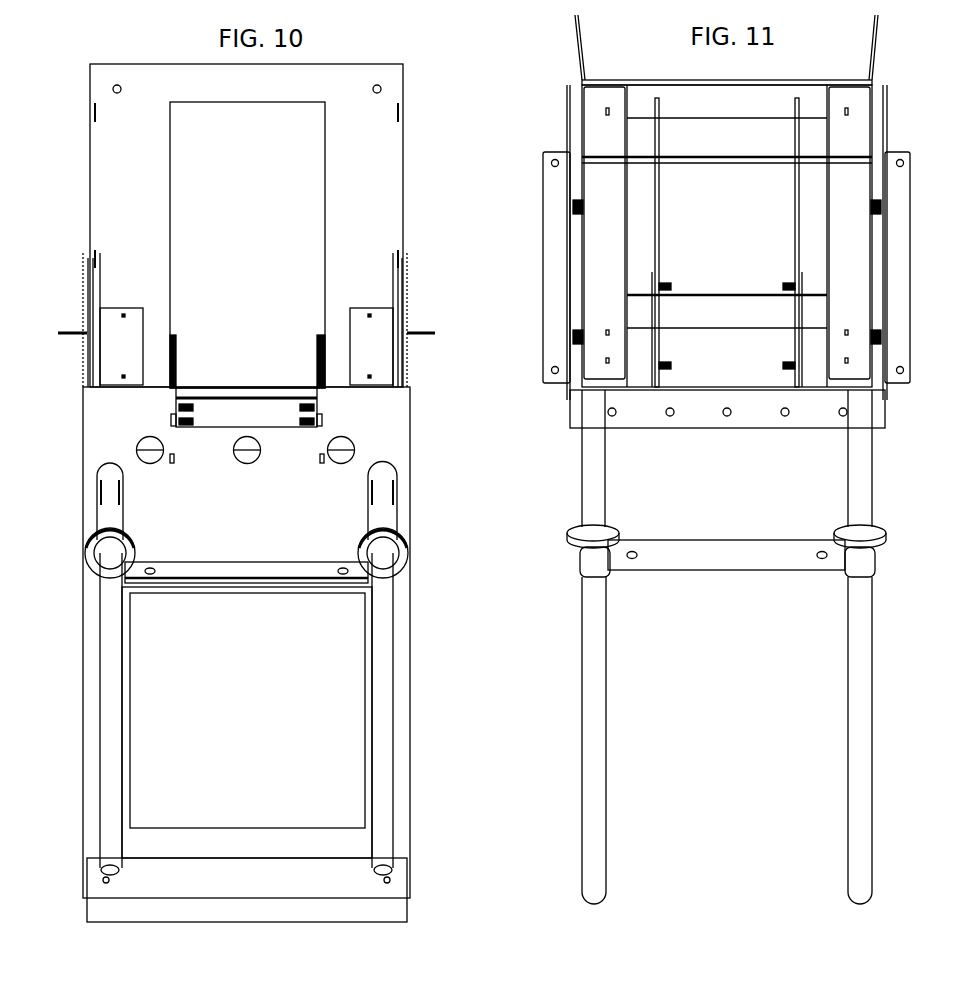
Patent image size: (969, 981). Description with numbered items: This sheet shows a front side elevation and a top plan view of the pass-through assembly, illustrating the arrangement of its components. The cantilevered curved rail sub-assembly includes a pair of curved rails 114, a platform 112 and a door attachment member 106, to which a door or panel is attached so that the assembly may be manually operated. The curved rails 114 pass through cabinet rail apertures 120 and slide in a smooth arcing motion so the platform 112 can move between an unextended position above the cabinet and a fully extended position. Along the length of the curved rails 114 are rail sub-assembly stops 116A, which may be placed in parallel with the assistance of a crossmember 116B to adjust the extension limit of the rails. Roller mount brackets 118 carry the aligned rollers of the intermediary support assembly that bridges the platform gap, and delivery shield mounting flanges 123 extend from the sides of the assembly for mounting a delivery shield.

In FIG. 10, the door attachment member 106 is at (395, 152).
In FIG. 10, the platform 112 is at (112, 328).
In FIG. 11, the platform 112 is at (727, 233).
In FIG. 10, the curved rail 114 is at (112, 672).
In FIG. 11, the curved rail 114 is at (598, 623).
In FIG. 10, the rail sub-assembly stop 116A is at (410, 542).
In FIG. 11, the rail sub-assembly stop 116A is at (580, 535).
In FIG. 10, the crossmember 116B is at (220, 575).
In FIG. 11, the crossmember 116B is at (728, 560).
In FIG. 10, the roller mount bracket 118 is at (176, 335).
In FIG. 11, the roller mount bracket 118 is at (797, 220).
In FIG. 10, the cabinet rail aperture 120 is at (97, 478).
In FIG. 10, the delivery shield mounting flange 123 is at (427, 338).
In FIG. 11, the delivery shield mounting flange 123 is at (553, 192).